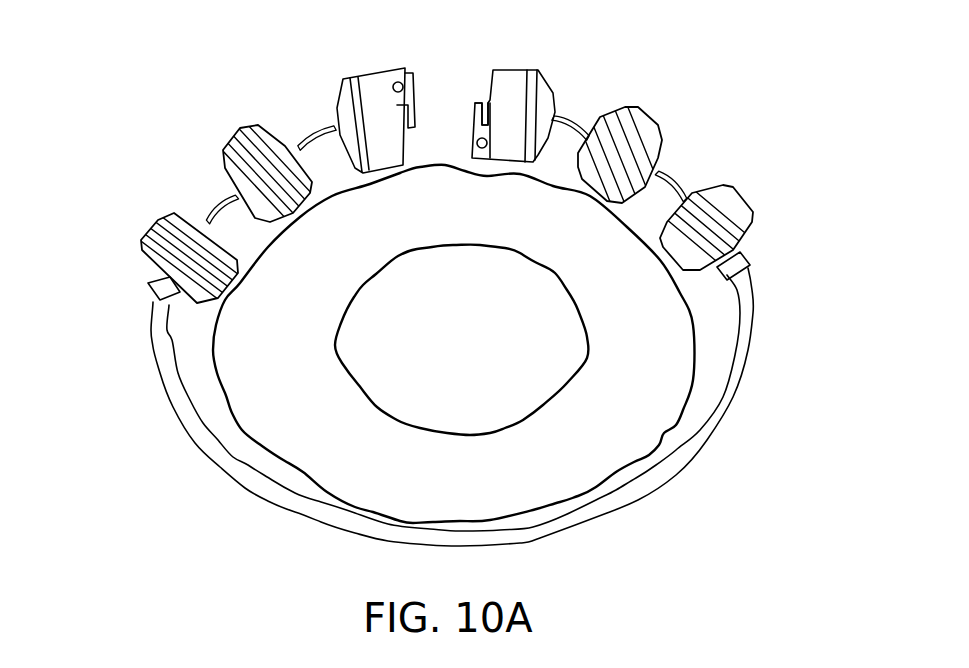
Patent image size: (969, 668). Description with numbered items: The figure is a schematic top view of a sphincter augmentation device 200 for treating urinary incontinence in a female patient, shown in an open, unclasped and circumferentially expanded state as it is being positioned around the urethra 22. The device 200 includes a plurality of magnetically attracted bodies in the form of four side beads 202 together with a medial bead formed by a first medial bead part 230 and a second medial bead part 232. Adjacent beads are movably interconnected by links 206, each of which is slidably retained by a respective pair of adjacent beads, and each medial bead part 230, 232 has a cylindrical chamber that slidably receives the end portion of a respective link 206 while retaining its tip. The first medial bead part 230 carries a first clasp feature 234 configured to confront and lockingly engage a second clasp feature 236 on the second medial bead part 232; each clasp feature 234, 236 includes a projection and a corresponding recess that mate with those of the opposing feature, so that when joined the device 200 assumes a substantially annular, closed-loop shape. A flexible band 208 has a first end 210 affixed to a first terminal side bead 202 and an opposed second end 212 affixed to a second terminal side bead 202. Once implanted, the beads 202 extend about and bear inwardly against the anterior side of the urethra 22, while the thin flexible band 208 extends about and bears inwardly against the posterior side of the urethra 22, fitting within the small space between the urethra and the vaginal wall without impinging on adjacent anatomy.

The sphincter augmentation device 200 is at (134, 97).
The side bead 202 is at (150, 228).
The link 206 is at (219, 207).
The flexible band 208 is at (220, 468).
The first end 210 is at (150, 308).
The second end 212 is at (750, 272).
The urethra 22 is at (260, 377).
The first medial bead part 230 is at (373, 70).
The second medial bead part 232 is at (518, 73).
The first clasp feature 234 is at (415, 97).
The second clasp feature 236 is at (471, 133).